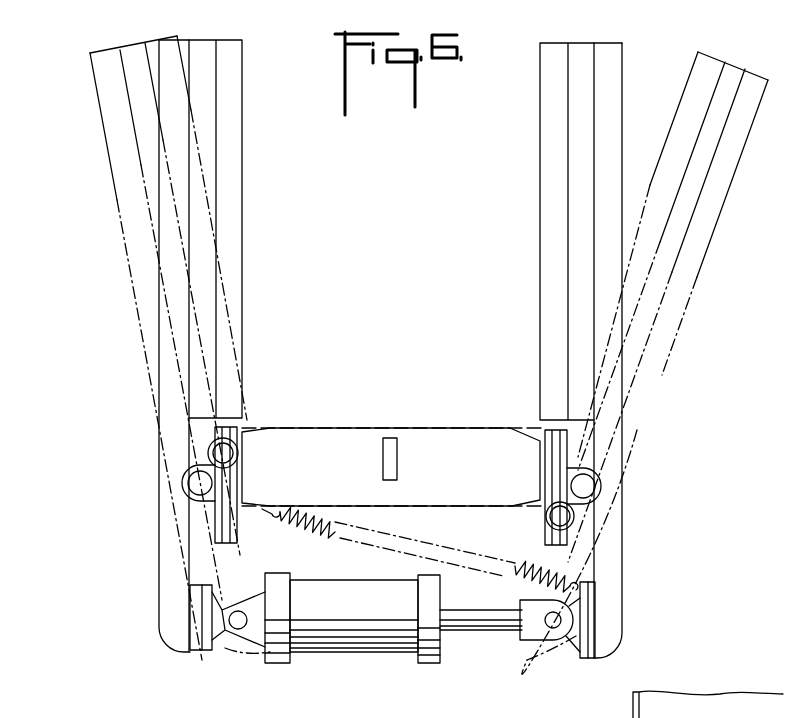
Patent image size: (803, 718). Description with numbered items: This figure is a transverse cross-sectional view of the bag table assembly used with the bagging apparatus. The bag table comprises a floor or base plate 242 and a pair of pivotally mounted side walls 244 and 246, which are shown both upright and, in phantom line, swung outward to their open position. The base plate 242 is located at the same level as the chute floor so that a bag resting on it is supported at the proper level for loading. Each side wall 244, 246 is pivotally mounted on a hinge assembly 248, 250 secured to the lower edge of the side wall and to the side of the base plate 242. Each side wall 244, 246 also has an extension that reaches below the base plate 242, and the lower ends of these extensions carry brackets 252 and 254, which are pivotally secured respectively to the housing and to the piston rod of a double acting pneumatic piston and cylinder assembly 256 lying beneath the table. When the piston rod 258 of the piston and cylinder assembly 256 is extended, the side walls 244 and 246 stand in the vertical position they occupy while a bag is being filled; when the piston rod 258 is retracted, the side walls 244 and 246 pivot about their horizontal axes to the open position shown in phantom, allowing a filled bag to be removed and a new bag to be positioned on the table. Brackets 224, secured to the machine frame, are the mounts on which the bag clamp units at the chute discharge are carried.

The bracket 224 is at (232, 273).
The base plate 242 is at (333, 440).
The side wall 244 is at (120, 204).
The side wall 246 is at (700, 230).
The hinge assembly 248 is at (183, 489).
The hinge assembly 250 is at (601, 485).
The bracket 252 is at (220, 653).
The bracket 254 is at (573, 647).
The double acting pneumatic piston and cylinder assembly 256 is at (362, 608).
The piston rod 258 is at (477, 631).